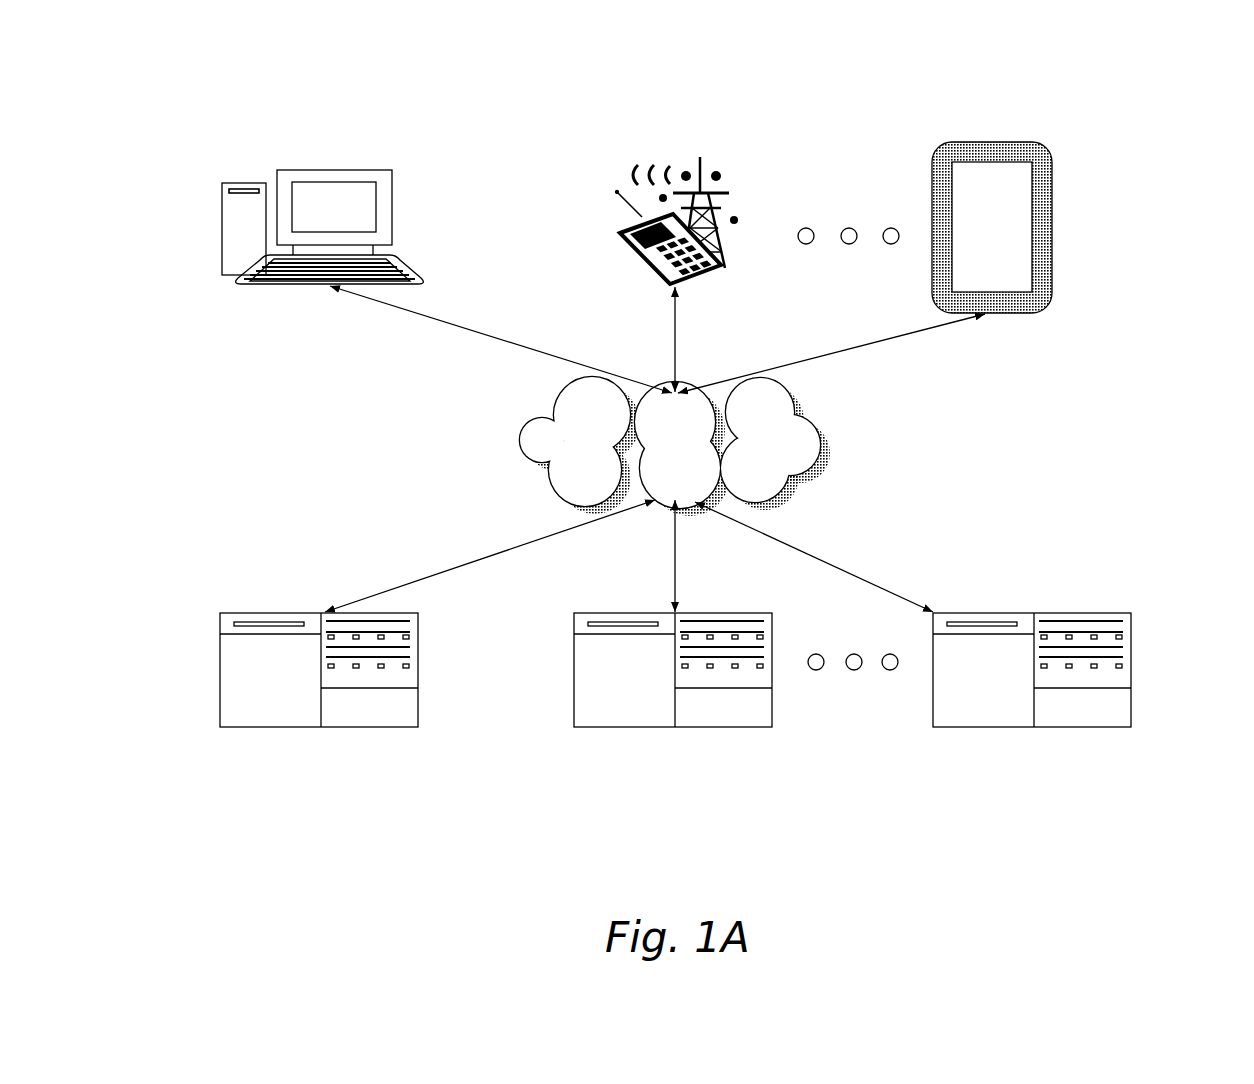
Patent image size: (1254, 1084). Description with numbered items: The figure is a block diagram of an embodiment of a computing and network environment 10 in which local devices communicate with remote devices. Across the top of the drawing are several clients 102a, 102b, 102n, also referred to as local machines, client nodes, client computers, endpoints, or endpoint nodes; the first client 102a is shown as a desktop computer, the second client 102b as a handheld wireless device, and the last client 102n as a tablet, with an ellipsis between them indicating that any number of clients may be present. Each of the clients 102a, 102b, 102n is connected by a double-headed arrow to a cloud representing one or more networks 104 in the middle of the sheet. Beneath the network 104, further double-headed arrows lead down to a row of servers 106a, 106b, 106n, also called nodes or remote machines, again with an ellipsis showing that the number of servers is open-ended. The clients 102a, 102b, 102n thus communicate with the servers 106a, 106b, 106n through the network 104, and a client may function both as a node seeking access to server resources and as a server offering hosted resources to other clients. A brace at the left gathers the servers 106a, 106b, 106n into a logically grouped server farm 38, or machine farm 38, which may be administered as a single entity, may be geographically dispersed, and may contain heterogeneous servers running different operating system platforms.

The computing and network environment 10 is at (1144, 83).
The client 102a is at (322, 255).
The client 102b is at (679, 242).
The client 102n is at (992, 259).
The network 104 is at (675, 446).
The server 106a is at (319, 686).
The server 106b is at (673, 685).
The server 106n is at (1032, 684).
The server farm 38 is at (227, 553).